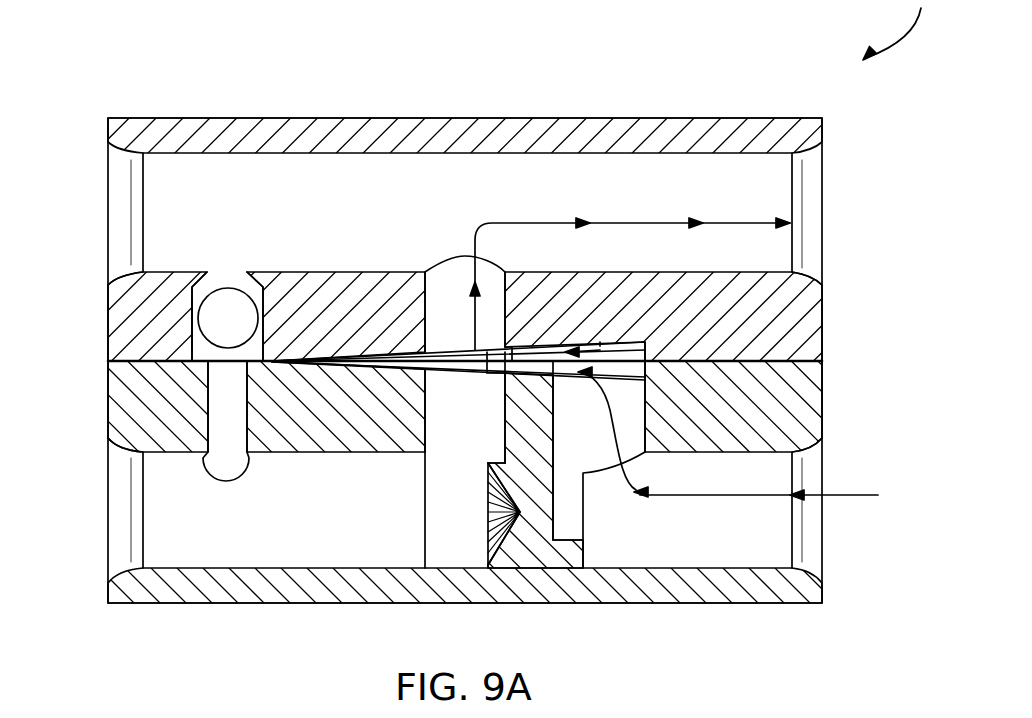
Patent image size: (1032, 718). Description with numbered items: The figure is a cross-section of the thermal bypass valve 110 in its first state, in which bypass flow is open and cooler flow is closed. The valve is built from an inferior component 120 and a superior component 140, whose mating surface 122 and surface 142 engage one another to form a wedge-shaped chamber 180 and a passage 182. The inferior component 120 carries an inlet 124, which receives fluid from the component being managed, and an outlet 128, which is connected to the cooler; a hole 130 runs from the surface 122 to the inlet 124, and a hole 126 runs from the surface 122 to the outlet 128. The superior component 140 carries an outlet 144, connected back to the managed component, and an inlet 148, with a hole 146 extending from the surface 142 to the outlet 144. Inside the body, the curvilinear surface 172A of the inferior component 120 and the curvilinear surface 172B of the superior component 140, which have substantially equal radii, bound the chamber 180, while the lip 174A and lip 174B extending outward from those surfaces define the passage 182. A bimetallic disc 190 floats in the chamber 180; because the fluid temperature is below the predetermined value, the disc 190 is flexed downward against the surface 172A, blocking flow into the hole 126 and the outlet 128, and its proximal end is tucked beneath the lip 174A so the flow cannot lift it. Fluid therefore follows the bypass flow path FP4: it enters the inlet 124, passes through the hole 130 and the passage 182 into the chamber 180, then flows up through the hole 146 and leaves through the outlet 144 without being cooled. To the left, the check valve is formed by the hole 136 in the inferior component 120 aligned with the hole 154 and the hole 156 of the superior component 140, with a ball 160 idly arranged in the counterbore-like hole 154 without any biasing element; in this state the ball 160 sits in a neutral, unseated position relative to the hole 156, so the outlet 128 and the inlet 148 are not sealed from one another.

The thermal bypass valve 110 is at (901, 347).
The inferior component 120 is at (200, 574).
The surface 122 is at (110, 375).
The inlet 124 is at (808, 545).
The hole 126 is at (510, 420).
The outlet 128 is at (122, 545).
The hole 130 is at (645, 415).
The hole 136 is at (205, 415).
The superior component 140 is at (324, 140).
The surface 142 is at (130, 360).
The outlet 144 is at (808, 182).
The hole 146 is at (511, 340).
The inlet 148 is at (122, 234).
The hole 154 is at (190, 320).
The hole 156 is at (210, 272).
The ball 160 is at (223, 310).
The surface 172A is at (398, 368).
The surface 172B is at (421, 347).
The lip 174A is at (556, 385).
The lip 174B is at (570, 345).
The chamber 180 is at (462, 352).
The passage 182 is at (600, 333).
The bimetallic disc 190 is at (458, 368).
The bypass flow path FP4 is at (740, 222).